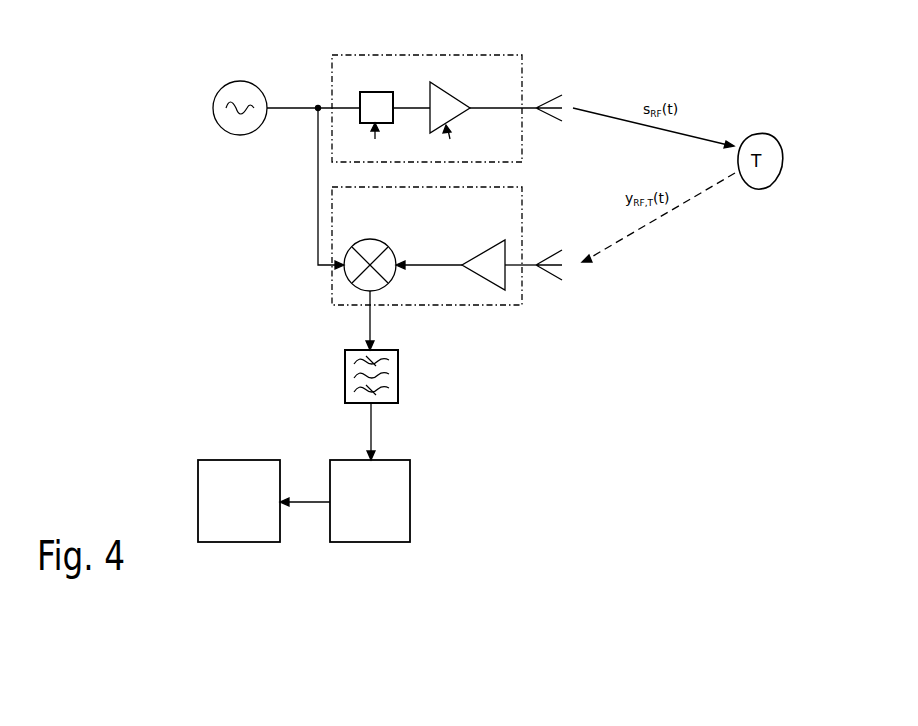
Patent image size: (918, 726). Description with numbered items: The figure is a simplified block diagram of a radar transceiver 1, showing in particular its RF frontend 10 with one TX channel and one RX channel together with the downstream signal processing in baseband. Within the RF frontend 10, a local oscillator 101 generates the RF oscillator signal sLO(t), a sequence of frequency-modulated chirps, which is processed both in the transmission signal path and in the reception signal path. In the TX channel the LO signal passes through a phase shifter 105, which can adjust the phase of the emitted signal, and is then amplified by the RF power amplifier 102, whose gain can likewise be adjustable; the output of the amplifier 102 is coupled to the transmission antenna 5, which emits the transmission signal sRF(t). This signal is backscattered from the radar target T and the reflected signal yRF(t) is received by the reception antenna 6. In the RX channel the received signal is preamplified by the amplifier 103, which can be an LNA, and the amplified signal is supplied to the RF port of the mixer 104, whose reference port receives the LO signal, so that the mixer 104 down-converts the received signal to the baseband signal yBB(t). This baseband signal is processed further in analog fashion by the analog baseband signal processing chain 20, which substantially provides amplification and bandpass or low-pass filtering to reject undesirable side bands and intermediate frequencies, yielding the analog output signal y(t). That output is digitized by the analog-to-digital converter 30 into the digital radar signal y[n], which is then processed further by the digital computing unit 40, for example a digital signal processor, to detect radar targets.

The radar transceiver 1 is at (640, 42).
The RF frontend 10 is at (265, 271).
The analog baseband signal processing chain 20 is at (400, 381).
The analog-to-digital converter 30 is at (345, 501).
The digital computing unit 40 is at (239, 501).
The local oscillator 101 is at (248, 96).
The RF power amplifier 102 is at (458, 100).
The amplifier 103 is at (482, 240).
The mixer 104 is at (378, 240).
The phase shifter 105 is at (382, 92).
The transmission antenna 5 is at (548, 92).
The reception antenna 6 is at (547, 250).